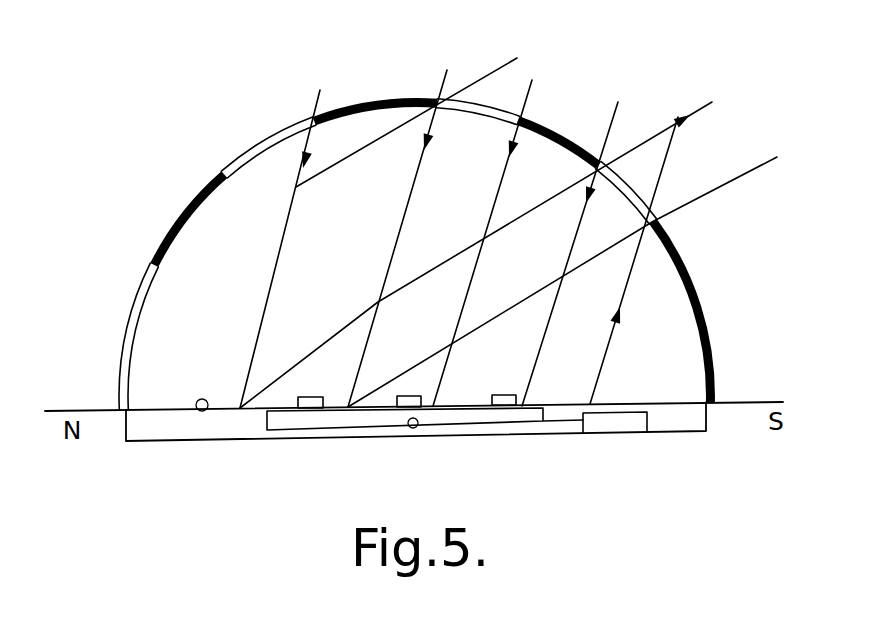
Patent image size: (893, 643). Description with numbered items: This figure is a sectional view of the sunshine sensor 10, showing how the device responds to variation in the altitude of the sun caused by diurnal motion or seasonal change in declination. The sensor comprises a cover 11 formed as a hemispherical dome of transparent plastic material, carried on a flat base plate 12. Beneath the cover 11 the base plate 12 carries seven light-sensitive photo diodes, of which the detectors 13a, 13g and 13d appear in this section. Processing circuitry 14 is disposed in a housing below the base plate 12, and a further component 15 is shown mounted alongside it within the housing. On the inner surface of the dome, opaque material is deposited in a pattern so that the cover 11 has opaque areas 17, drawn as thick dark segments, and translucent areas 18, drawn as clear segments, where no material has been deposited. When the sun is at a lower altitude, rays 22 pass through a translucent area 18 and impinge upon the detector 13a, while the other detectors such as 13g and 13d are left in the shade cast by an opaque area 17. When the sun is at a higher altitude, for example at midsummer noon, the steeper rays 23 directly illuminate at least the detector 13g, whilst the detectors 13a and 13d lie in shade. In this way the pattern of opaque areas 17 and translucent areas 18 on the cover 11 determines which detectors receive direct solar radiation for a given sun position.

The sunshine sensor 10 is at (722, 296).
The cover 11 is at (545, 178).
The base plate 12 is at (203, 411).
The detector 13a is at (305, 396).
The detector 13d is at (506, 395).
The detector 13g is at (410, 396).
The processing circuitry 14 is at (415, 428).
The circuit element 15 is at (620, 420).
The opaque area 17 is at (190, 217).
The translucent area 18 is at (268, 140).
The rays 22 is at (480, 233).
The rays 23 is at (280, 262).